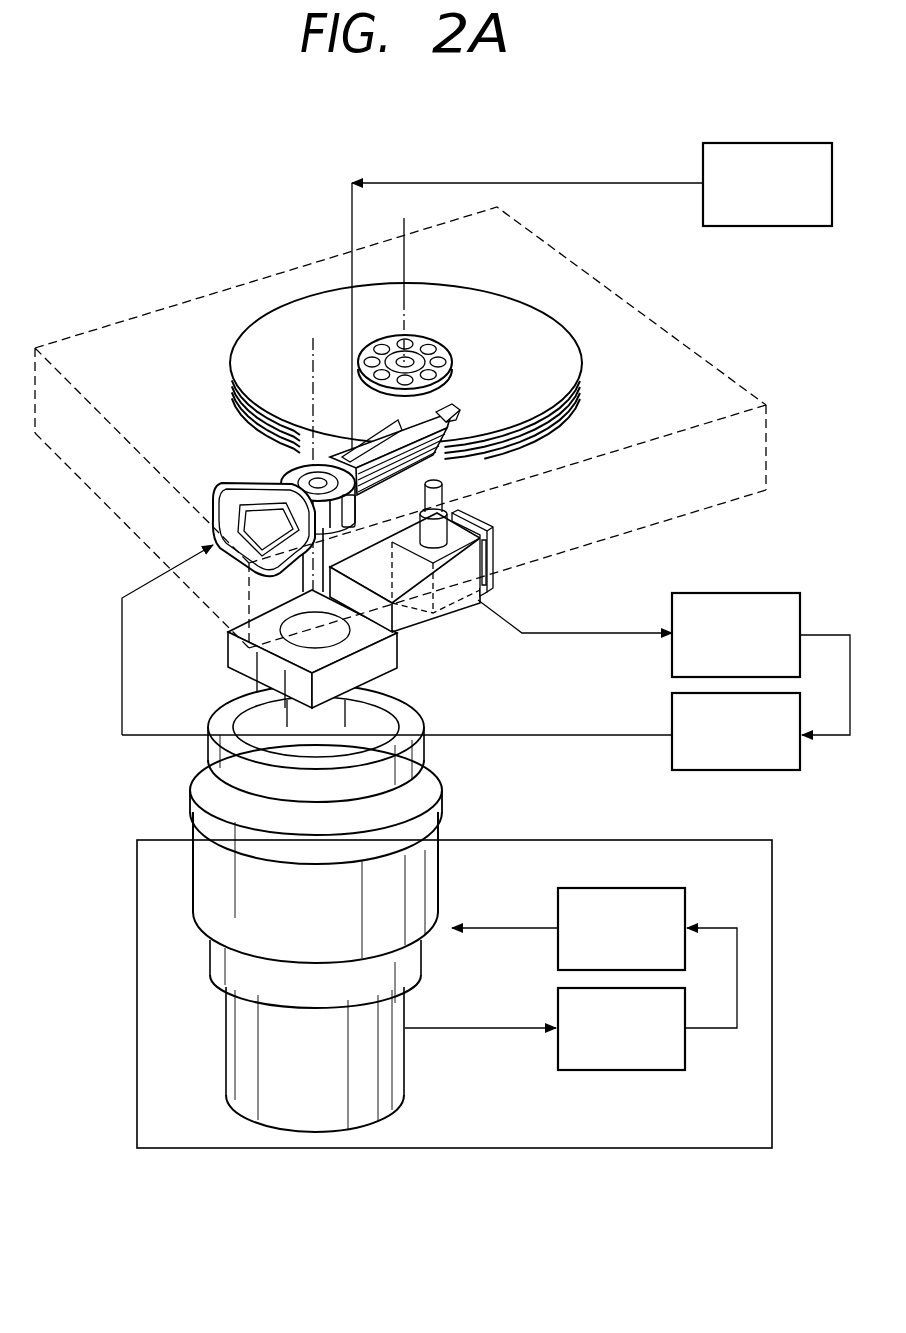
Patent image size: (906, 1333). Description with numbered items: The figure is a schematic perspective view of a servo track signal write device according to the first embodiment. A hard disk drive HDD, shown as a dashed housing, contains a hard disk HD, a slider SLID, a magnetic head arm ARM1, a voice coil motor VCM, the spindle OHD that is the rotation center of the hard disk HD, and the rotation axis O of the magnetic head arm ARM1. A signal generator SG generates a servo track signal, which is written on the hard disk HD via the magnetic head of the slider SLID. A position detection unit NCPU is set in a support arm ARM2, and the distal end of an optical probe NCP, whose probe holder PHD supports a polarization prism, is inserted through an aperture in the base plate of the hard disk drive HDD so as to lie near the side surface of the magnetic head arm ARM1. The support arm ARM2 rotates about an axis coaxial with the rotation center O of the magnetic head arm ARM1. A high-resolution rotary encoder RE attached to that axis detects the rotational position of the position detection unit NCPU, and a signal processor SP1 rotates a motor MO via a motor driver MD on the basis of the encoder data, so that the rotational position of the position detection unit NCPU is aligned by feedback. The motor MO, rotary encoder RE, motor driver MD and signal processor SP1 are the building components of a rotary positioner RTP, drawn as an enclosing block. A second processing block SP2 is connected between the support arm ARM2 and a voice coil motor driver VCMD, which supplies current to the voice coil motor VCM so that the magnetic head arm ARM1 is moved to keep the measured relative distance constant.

The hard disk drive HDD is at (205, 294).
The hard disk HD is at (510, 335).
The spindle (rotation center) of the hard disk OHD is at (410, 248).
The rotation axis of the magnetic head arm O is at (313, 360).
The slider SLID is at (455, 405).
The magnetic head arm ARM1 is at (455, 468).
The voice coil motor VCM is at (240, 487).
The optical probe NCP is at (445, 490).
The probe holder PHD is at (492, 528).
The position detection unit NCPU is at (496, 584).
The support arm ARM2 is at (440, 628).
The signal generator SG is at (592, 296).
The second position sensor / signal processor SP2 is at (761, 664).
The voice coil motor driver VCMD is at (736, 731).
The motor MO is at (430, 876).
The rotary encoder RE is at (400, 1060).
The motor driver MD is at (568, 929).
The signal processor SP1 is at (571, 999).
The rotary positioner RTP is at (454, 994).